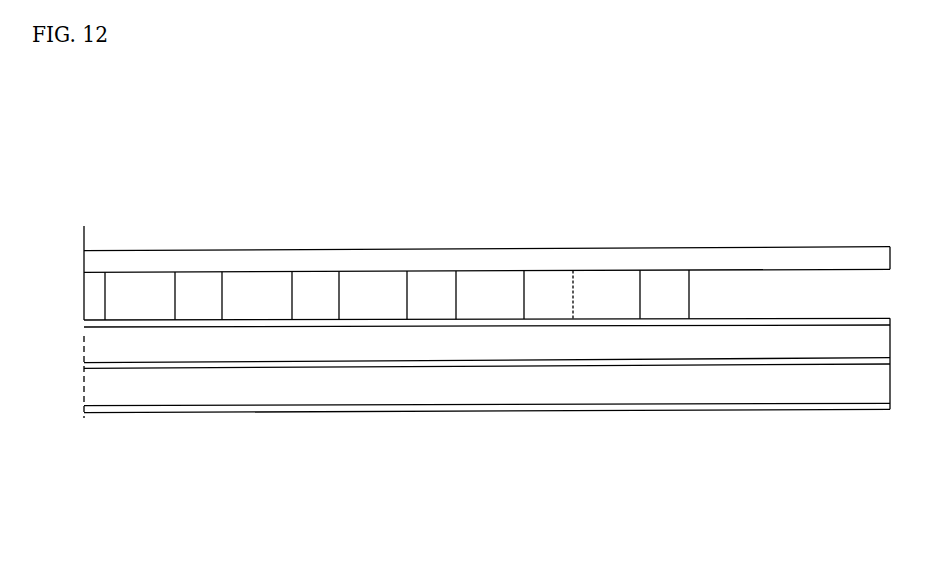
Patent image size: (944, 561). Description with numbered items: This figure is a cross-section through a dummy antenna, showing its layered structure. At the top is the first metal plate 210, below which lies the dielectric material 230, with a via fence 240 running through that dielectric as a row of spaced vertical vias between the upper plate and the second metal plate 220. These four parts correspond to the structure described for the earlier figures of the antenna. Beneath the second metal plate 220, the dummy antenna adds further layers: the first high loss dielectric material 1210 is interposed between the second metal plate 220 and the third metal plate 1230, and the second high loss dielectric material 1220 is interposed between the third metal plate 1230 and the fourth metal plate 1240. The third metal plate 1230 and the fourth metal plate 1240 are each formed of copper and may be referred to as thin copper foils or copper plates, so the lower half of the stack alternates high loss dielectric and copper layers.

The first metal plate 210 is at (743, 258).
The second metal plate 220 is at (602, 320).
The dielectric material 230 is at (781, 298).
The via fence 240 is at (547, 293).
The first high loss dielectric material 1210 is at (432, 344).
The second high loss dielectric material 1220 is at (300, 387).
The third metal plate 1230 is at (557, 367).
The fourth metal plate 1240 is at (692, 410).